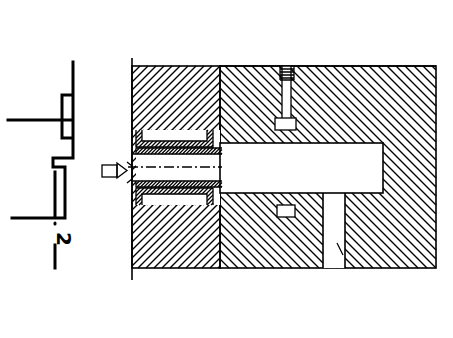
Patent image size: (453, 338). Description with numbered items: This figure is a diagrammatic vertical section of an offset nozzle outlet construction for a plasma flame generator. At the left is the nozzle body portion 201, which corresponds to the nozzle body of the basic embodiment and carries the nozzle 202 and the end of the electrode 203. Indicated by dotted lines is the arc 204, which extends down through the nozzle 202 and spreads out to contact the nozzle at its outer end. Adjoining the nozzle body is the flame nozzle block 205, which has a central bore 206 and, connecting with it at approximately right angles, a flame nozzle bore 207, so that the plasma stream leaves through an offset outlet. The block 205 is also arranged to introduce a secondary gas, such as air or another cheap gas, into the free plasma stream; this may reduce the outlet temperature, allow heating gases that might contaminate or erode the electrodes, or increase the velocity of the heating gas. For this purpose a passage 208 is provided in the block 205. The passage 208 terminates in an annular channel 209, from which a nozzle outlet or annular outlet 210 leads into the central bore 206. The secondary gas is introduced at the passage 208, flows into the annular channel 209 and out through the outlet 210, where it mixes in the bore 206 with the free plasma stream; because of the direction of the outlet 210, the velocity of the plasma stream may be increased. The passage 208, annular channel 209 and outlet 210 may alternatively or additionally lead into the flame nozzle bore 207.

The nozzle body portion 201 is at (188, 255).
The nozzle 202 is at (124, 174).
The end of electrode 203 is at (103, 176).
The arc 204 is at (137, 151).
The flame nozzle block 205 is at (400, 252).
The central bore 206 is at (337, 150).
The flame nozzle bore 207 is at (350, 262).
The passage 208 is at (288, 67).
The annular channel 209 is at (283, 217).
The nozzle outlet 210 is at (335, 210).